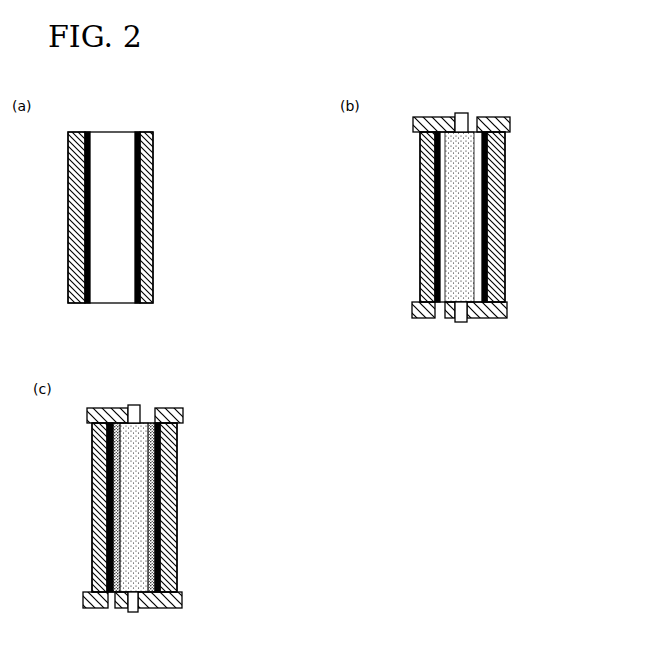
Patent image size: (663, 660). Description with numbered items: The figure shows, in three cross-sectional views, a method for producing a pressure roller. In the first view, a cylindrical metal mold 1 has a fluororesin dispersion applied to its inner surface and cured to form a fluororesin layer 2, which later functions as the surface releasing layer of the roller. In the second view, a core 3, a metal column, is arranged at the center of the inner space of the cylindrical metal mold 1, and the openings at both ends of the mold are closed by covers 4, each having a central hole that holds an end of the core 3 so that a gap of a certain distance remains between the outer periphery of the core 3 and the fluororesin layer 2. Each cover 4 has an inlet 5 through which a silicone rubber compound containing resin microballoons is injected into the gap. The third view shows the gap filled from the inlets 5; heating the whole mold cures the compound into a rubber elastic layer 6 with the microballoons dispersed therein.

The cylindrical metal mold 1 is at (152, 183).
The fluororesin layer 2 is at (92, 275).
The core 3 is at (462, 192).
The cover 4 is at (510, 128).
The inlet 5 is at (477, 125).
The rubber elastic layer 6 is at (170, 505).